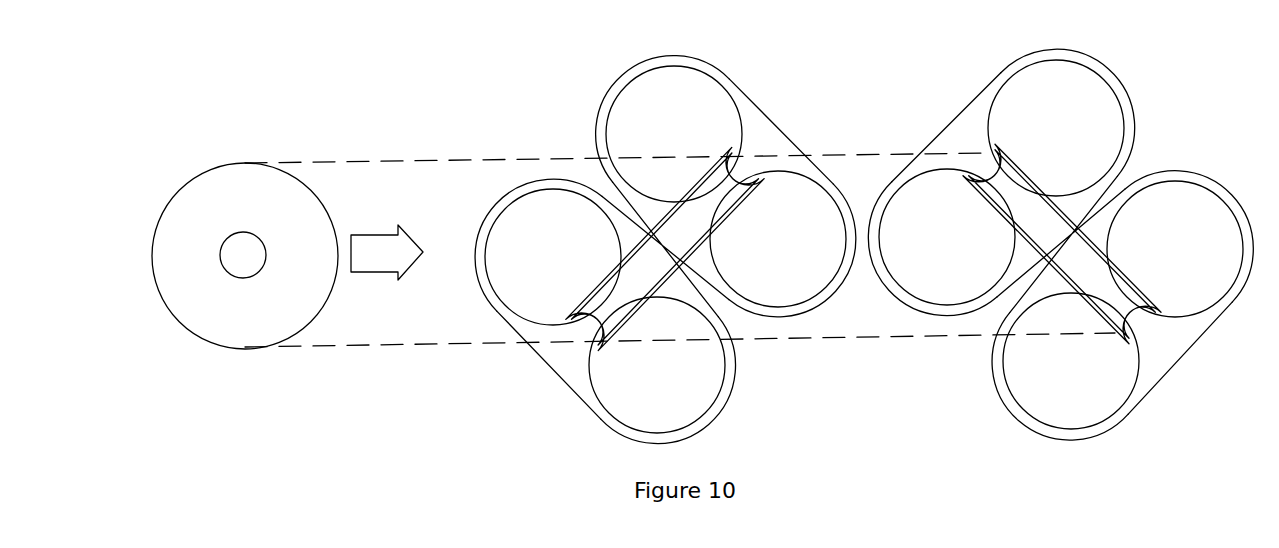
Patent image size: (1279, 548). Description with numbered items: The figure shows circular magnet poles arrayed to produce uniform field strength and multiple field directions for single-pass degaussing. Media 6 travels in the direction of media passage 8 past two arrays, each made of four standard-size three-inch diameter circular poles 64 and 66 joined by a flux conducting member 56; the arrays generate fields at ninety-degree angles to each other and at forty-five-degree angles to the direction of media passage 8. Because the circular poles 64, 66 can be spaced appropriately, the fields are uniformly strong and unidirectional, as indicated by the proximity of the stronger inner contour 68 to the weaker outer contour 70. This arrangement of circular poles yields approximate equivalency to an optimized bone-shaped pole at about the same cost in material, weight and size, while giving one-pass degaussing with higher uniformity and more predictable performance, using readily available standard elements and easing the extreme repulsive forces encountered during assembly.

The media 6 is at (253, 164).
The direction of media passage 8 is at (410, 273).
The flux conducting member 56 is at (864, 246).
The circular poles 64 is at (568, 208).
The circular poles 66 is at (754, 292).
The stronger inner contour 68 is at (756, 158).
The weaker outer contour 70 is at (755, 128).